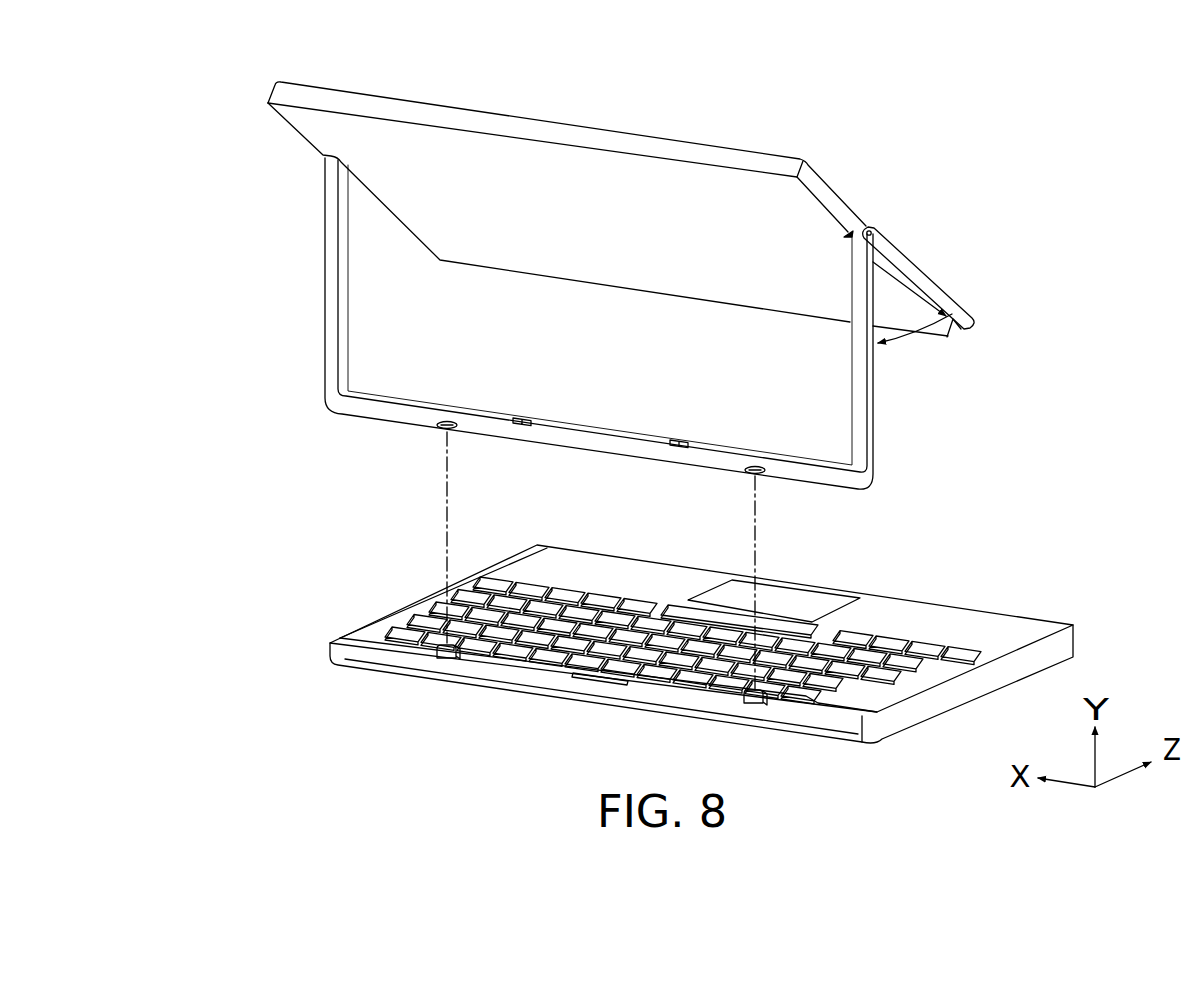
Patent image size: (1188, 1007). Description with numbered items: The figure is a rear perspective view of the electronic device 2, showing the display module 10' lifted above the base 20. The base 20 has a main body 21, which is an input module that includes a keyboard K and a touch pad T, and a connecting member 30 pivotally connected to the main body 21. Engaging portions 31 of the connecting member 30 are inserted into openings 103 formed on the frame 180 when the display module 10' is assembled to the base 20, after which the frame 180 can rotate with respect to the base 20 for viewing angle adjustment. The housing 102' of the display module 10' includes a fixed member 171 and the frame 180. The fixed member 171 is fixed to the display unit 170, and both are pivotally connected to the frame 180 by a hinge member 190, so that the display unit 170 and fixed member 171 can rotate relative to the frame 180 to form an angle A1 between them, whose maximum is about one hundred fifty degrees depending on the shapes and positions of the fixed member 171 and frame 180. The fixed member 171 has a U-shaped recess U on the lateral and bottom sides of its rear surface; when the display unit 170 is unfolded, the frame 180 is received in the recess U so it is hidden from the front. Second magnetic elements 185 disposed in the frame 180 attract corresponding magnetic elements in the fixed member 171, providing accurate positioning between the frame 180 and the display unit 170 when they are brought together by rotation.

The electronic device 2 is at (187, 70).
The display module 10' is at (1059, 73).
The base 20 is at (680, 647).
The main body 21 is at (935, 624).
The connecting member 30 is at (322, 648).
The engaging portions 31 is at (440, 658).
The housing 102' is at (724, 323).
The openings 103 is at (430, 428).
The display unit 170 is at (666, 137).
The fixed member 171 is at (930, 277).
The frame 180 is at (878, 403).
The second magnetic elements 185 is at (520, 427).
The hinge member 190 is at (875, 229).
The touch pad T is at (803, 607).
The keyboard K is at (963, 654).
The U-shaped recess U is at (893, 254).
The angle A1 is at (915, 344).